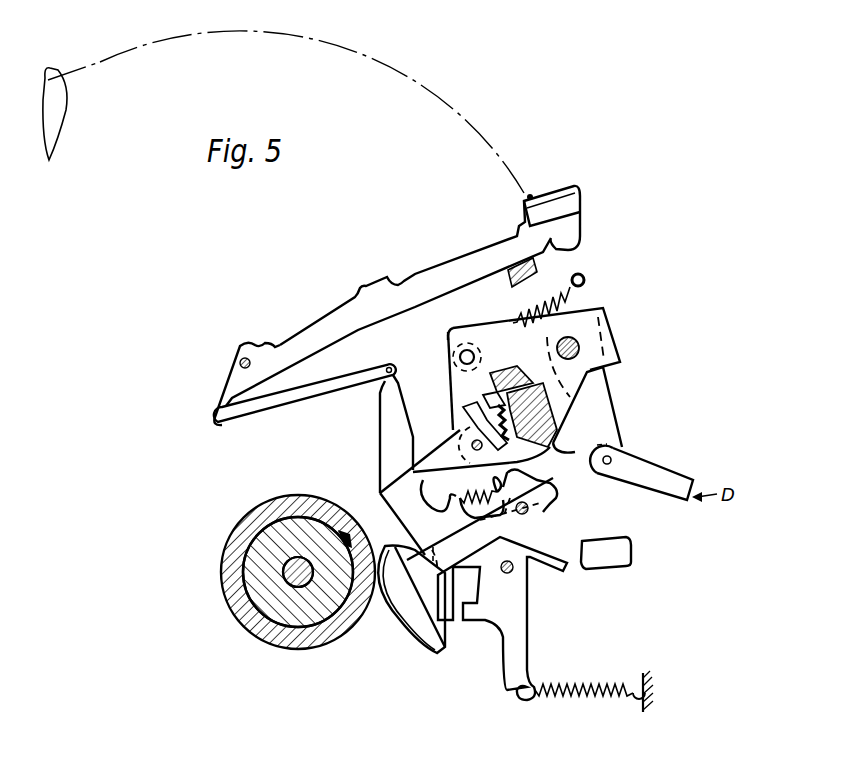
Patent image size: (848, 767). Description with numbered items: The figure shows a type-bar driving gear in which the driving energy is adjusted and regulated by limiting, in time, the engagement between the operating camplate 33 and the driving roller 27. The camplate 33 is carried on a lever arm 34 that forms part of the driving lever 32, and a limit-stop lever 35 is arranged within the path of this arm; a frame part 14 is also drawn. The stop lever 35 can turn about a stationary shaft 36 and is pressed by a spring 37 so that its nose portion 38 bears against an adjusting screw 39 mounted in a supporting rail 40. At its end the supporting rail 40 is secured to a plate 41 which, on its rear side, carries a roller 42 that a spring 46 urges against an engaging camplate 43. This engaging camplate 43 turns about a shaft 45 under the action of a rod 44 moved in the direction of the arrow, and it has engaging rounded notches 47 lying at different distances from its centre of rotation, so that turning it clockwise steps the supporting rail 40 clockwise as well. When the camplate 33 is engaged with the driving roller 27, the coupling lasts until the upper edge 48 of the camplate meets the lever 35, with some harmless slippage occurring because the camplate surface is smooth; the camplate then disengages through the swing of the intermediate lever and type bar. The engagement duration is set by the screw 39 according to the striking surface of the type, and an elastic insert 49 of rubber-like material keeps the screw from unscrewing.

The frame lever 14 is at (517, 640).
The driving roller 27 is at (258, 638).
The driving lever 32 is at (553, 542).
The operating camplate 33 is at (428, 628).
The lever arm 34 is at (430, 560).
The limit-stop lever 35 is at (423, 458).
The stationary shaft 36 is at (483, 448).
The spring 37 is at (520, 433).
The nose portion 38 is at (470, 417).
The adjusting screw 39 is at (483, 398).
The supporting rail 40 is at (540, 413).
The plate 41 is at (460, 380).
The roller 42 is at (458, 352).
The engaging camplate 43 is at (573, 397).
The rod 44 is at (653, 470).
The shaft 45 is at (580, 347).
The spring 46 is at (564, 295).
The engaging rounded notches 47 is at (550, 433).
The upper edge 48 is at (403, 560).
The elastic insert 49 is at (564, 383).